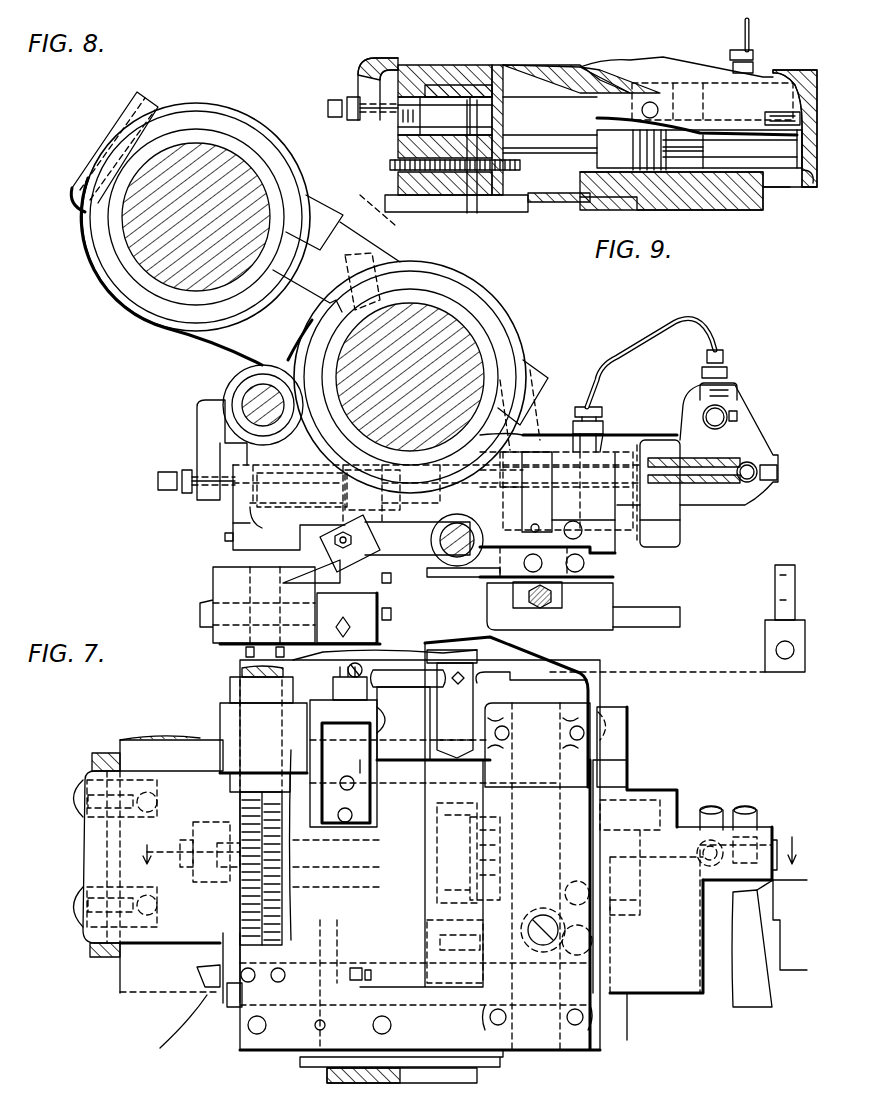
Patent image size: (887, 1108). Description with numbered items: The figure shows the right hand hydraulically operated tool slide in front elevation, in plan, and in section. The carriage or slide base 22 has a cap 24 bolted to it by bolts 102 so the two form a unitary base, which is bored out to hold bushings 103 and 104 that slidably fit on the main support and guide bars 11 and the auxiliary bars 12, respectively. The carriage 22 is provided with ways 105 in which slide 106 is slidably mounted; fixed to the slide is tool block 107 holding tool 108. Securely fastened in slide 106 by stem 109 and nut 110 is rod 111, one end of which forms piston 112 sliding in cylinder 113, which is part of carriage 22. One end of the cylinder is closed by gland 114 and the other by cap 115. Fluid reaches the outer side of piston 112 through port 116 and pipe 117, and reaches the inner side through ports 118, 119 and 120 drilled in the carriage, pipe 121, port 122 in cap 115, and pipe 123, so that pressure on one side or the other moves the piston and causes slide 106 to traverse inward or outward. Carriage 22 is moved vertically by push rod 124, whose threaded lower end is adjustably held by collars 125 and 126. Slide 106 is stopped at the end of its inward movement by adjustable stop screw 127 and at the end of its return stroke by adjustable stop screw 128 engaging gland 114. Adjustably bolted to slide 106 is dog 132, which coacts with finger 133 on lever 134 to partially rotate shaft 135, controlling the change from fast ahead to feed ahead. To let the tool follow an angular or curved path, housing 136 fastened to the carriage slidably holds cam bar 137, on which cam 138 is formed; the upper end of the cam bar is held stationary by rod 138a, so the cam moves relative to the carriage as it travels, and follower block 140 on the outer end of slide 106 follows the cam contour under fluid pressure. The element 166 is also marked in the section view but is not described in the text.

In FIG. 8, the main support and guide bars 11 is at (458, 328).
In FIG. 9, the main support and guide bars 11 is at (585, 70).
In FIG. 7, the main support and guide bars 11 is at (330, 1078).
In FIG. 8, the auxiliary support bars 12 is at (162, 280).
In FIG. 7, the auxiliary support bars 12 is at (127, 970).
In FIG. 8, the carriage or slide base 22 is at (232, 337).
In FIG. 9, the carriage or slide base 22 is at (395, 52).
In FIG. 7, the carriage or slide base 22 is at (220, 710).
In FIG. 8, the cap 24 is at (212, 103).
In FIG. 8, the bolts 102 is at (140, 112).
In FIG. 9, the bolts 102 is at (345, 228).
In FIG. 8, the bushing 103 is at (430, 282).
In FIG. 9, the bushing 103 is at (497, 65).
In FIG. 8, the bushing 104 is at (160, 225).
In FIG. 7, the ways 105 is at (585, 775).
In FIG. 8, the slide 106 is at (233, 528).
In FIG. 9, the slide 106 is at (472, 200).
In FIG. 7, the slide 106 is at (425, 875).
In FIG. 8, the tool block 107 is at (222, 632).
In FIG. 9, the tool block 107 is at (410, 208).
In FIG. 7, the tool block 107 is at (212, 1010).
In FIG. 8, the tool 108 is at (213, 605).
In FIG. 7, the tool 108 is at (200, 975).
In FIG. 8, the stem 109 is at (300, 510).
In FIG. 9, the stem 109 is at (492, 118).
In FIG. 8, the nut 110 is at (268, 529).
In FIG. 9, the nut 110 is at (418, 75).
In FIG. 8, the rod 111 is at (372, 492).
In FIG. 9, the rod 111 is at (548, 153).
In FIG. 7, the rod 111 is at (397, 825).
In FIG. 8, the piston 112 is at (542, 508).
In FIG. 9, the piston 112 is at (697, 150).
In FIG. 7, the piston 112 is at (500, 903).
In FIG. 8, the cylinder 113 is at (655, 512).
In FIG. 9, the cylinder 113 is at (765, 180).
In FIG. 7, the cylinder 113 is at (598, 833).
In FIG. 9, the gland 114 is at (575, 205).
In FIG. 7, the gland 114 is at (470, 820).
In FIG. 8, the cap 115 is at (672, 545).
In FIG. 9, the cap 115 is at (812, 190).
In FIG. 7, the cap 115 is at (640, 787).
In FIG. 8, the port 116 is at (712, 462).
In FIG. 9, the port 116 is at (770, 120).
In FIG. 8, the pipe 117 is at (758, 468).
In FIG. 7, the pipe 117 is at (758, 818).
In FIG. 8, the port 118 is at (570, 445).
In FIG. 9, the port 118 is at (654, 103).
In FIG. 8, the port 119 is at (560, 425).
In FIG. 9, the port 119 is at (712, 101).
In FIG. 8, the port 120 is at (602, 438).
In FIG. 8, the pipe 121 is at (650, 348).
In FIG. 9, the pipe 121 is at (758, 52).
In FIG. 8, the port 122 is at (700, 402).
In FIG. 8, the pipe 123 is at (727, 410).
In FIG. 7, the pipe 123 is at (713, 806).
In FIG. 8, the push rod 124 is at (255, 402).
In FIG. 7, the push rod 124 is at (242, 672).
In FIG. 7, the collar 125 is at (230, 690).
In FIG. 7, the collar 126 is at (171, 753).
In FIG. 8, the adjustable stop screw 127 is at (160, 483).
In FIG. 9, the adjustable stop screw 127 is at (335, 100).
In FIG. 7, the adjustable stop screw 127 is at (167, 867).
In FIG. 8, the adjustable stop screw 128 is at (224, 539).
In FIG. 9, the adjustable stop screw 128 is at (392, 163).
In FIG. 8, the dog 132 is at (383, 615).
In FIG. 7, the dog 132 is at (295, 713).
In FIG. 8, the finger 133 is at (392, 578).
In FIG. 8, the lever 134 is at (376, 549).
In FIG. 7, the lever 134 is at (398, 678).
In FIG. 8, the shaft or rod 135 is at (453, 524).
In FIG. 7, the shaft or rod 135 is at (452, 703).
In FIG. 8, the housing 136 is at (550, 606).
In FIG. 7, the housing 136 is at (615, 725).
In FIG. 8, the cam bar 137 is at (618, 600).
In FIG. 7, the cam bar 137 is at (557, 673).
In FIG. 7, the cam 138 is at (535, 940).
In FIG. 8, the rod 138a is at (787, 572).
In FIG. 7, the follower block 140 is at (768, 903).
In FIG. 9, the washer 166 is at (800, 190).